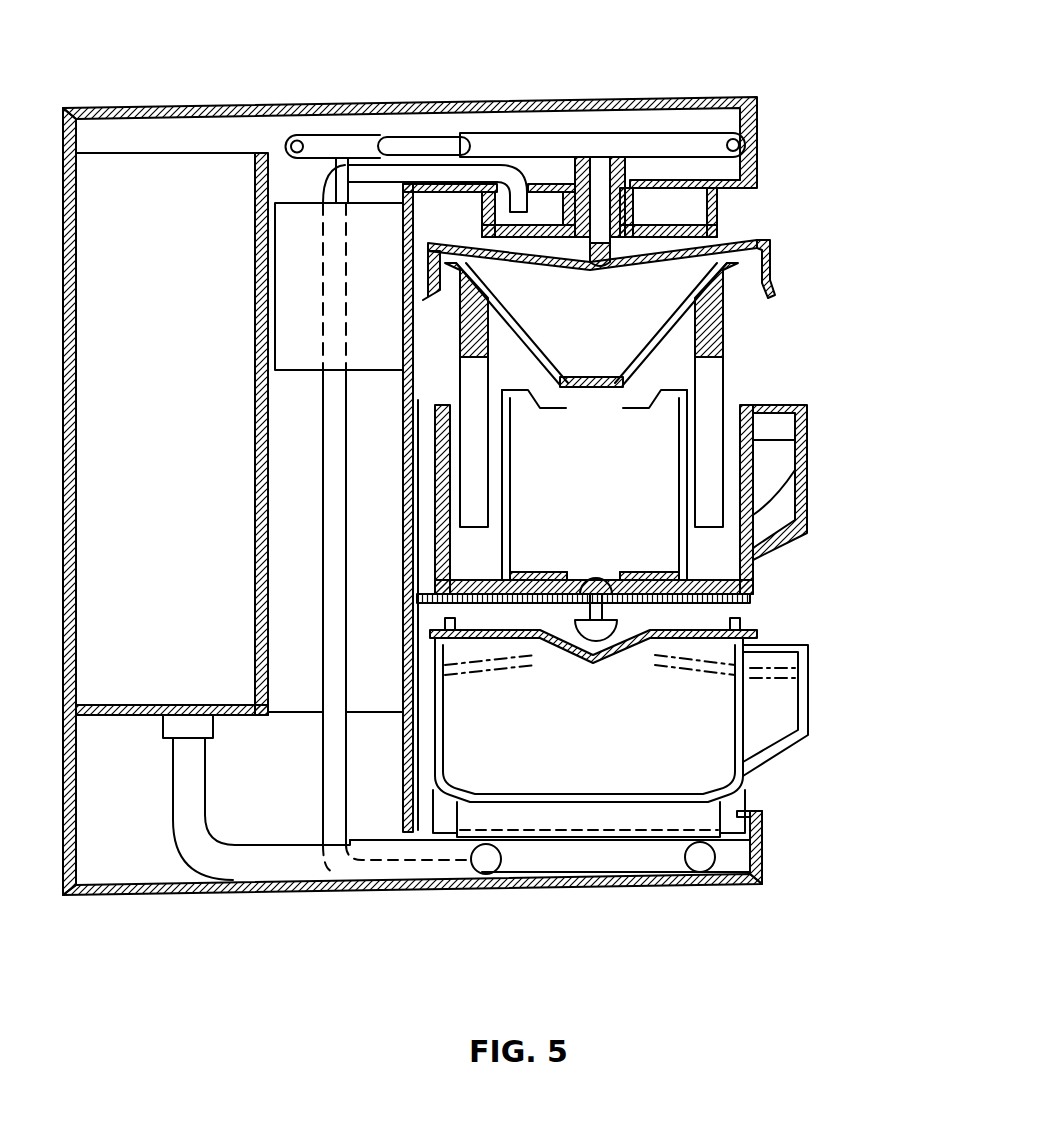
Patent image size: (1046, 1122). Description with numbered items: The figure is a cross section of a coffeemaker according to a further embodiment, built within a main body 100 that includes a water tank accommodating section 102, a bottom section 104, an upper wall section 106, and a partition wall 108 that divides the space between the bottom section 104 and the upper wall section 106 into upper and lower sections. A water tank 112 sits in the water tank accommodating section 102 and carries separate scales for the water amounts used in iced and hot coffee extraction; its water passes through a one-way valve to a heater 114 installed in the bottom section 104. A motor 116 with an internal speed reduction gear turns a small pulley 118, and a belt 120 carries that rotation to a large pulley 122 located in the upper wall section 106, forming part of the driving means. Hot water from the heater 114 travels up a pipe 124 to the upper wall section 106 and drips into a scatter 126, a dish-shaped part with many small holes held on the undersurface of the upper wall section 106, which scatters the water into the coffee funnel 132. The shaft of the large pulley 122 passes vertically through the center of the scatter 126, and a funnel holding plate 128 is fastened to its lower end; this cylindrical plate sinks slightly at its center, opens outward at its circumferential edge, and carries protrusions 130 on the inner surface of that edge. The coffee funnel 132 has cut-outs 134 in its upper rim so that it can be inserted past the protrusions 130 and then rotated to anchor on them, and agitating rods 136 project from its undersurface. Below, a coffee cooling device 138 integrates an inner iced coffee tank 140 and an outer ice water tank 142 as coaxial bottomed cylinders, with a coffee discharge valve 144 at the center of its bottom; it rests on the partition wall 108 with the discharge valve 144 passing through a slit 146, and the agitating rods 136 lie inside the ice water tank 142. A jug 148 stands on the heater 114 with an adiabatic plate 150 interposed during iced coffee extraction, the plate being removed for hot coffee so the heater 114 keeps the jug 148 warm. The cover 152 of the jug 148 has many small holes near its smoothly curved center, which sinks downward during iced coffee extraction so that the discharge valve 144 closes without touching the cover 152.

The main body 100 is at (196, 78).
The water tank accommodating section 102 is at (62, 822).
The bottom section 104 is at (762, 860).
The upper wall section 106 is at (757, 152).
The partition wall 108 is at (750, 593).
The water tank 112 is at (190, 433).
The heater 114 is at (620, 862).
The motor 116 is at (305, 372).
The small pulley 118 is at (333, 135).
The belt 120 is at (420, 137).
The large pulley 122 is at (660, 133).
The pipe 124 is at (322, 512).
The scatter 126 is at (718, 206).
The funnel holding plate 128 is at (748, 235).
The protrusions 130 is at (440, 300).
The coffee funnel 132 is at (720, 352).
The cut-outs 134 is at (742, 290).
The agitating rods 136 is at (725, 380).
The coffee cooling device 138 is at (885, 420).
The iced coffee tank 140 is at (745, 510).
The ice water tank 142 is at (760, 447).
The coffee discharge valve 144 is at (598, 578).
The slit 146 is at (707, 597).
The jug 148 is at (808, 693).
The adiabatic plate 150 is at (678, 815).
The cover 152 is at (705, 640).